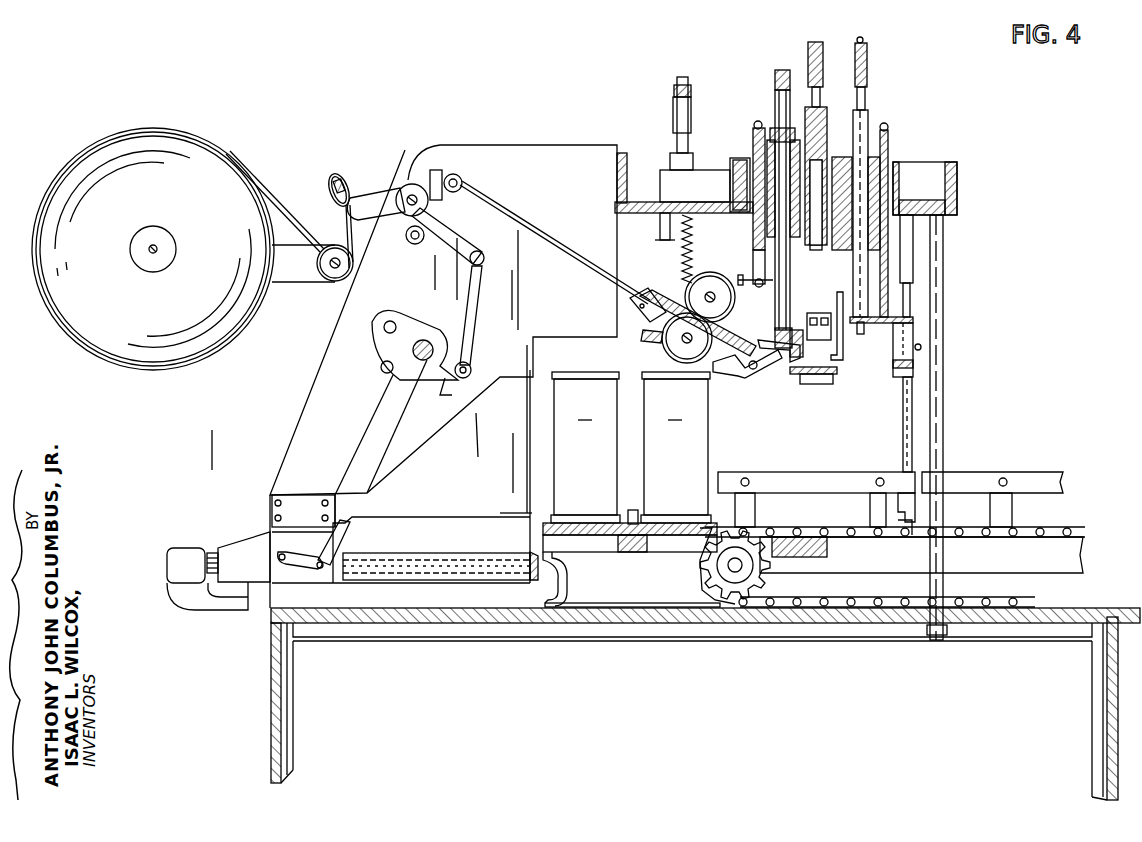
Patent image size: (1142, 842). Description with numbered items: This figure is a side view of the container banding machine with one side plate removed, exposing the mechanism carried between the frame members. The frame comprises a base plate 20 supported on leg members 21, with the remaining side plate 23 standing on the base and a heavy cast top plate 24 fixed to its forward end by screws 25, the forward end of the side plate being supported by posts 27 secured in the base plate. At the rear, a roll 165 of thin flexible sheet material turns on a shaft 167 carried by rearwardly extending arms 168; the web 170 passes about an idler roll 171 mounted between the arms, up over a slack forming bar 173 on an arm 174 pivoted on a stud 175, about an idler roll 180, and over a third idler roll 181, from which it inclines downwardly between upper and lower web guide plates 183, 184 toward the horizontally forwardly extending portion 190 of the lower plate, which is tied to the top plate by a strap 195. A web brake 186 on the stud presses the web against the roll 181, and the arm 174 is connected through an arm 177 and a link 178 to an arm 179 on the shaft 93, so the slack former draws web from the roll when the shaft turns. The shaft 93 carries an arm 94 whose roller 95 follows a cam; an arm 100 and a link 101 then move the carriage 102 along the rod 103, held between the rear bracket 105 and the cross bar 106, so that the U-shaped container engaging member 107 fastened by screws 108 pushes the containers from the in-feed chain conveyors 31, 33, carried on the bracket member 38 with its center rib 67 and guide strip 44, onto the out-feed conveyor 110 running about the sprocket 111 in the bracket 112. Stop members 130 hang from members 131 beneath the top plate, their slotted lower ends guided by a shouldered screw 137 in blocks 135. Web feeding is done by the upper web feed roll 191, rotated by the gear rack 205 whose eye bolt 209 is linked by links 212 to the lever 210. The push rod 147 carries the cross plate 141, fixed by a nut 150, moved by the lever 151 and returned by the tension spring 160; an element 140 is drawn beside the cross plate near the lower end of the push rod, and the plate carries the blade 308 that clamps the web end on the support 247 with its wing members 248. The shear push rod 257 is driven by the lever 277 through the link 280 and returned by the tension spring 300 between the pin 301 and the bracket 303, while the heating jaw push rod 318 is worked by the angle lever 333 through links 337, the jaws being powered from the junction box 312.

The base plate 20 is at (468, 624).
The leg members 21 is at (280, 728).
The side plate 23 is at (550, 175).
The top plate 24 is at (698, 208).
The screws 25 is at (626, 164).
The posts 27 is at (944, 372).
The in-feed chain conveyor 31 is at (566, 515).
The in-feed chain conveyor 33 is at (652, 522).
The bracket member 38 is at (568, 568).
The guide strip 44 is at (636, 512).
The center rib 67 is at (630, 552).
The shaft 93 is at (421, 340).
The arm 94 is at (432, 345).
The roller 95 is at (469, 366).
The arm 100 is at (382, 415).
The link 101 is at (300, 570).
The carriage 102 is at (235, 568).
The rod 103 is at (212, 548).
The bracket 105 is at (230, 606).
The cross bar 106 is at (530, 550).
The U-shaped container engaging member 107 is at (468, 482).
The screws 108 is at (280, 500).
The out-feed conveyor 110 is at (788, 530).
The sprocket 111 is at (702, 565).
The bracket 112 is at (775, 570).
The stop members 130 is at (903, 449).
The members 131 is at (913, 240).
The blocks 135 is at (915, 508).
The shouldered screw 137 is at (898, 520).
The block 140 is at (905, 340).
The cross plate 141 is at (913, 319).
The push rod 147 is at (870, 124).
The nut 150 is at (868, 50).
The lever 151 is at (858, 52).
The tension spring 160 is at (890, 145).
The roll 165 is at (143, 300).
The shaft 167 is at (152, 247).
The arms 168 is at (288, 282).
The web 170 is at (290, 230).
The idler roll 171 is at (329, 281).
The slack forming bar 173 is at (337, 178).
The arm 174 is at (378, 205).
The stud 175 is at (418, 201).
The arm 177 is at (460, 248).
The link 178 is at (474, 306).
The arm 179 is at (442, 386).
The idler roll 180 is at (412, 244).
The idler roll 181 is at (462, 182).
The upper web guide plate 183 is at (643, 288).
The lower web guide plate 184 is at (632, 290).
The web brake 186 is at (440, 172).
The horizontally forwardly extending portion 190 is at (775, 372).
The upper web feed roll 191 is at (720, 277).
The strap 195 is at (415, 168).
The gear rack 205 is at (690, 246).
The eye bolt 209 is at (688, 133).
The lever 210 is at (684, 82).
The links 212 is at (690, 100).
The support 247 is at (814, 386).
The wing members 248 is at (837, 372).
The push rod 257 is at (768, 130).
The lever 277 is at (781, 70).
The link 280 is at (775, 96).
The tension spring 300 is at (754, 255).
The pin 301 is at (745, 282).
The bracket 303 is at (756, 122).
The blade 308 is at (845, 358).
The junction box 312 is at (957, 185).
The push rod 318 is at (824, 122).
The angle lever 333 is at (814, 42).
The links 337 is at (821, 84).